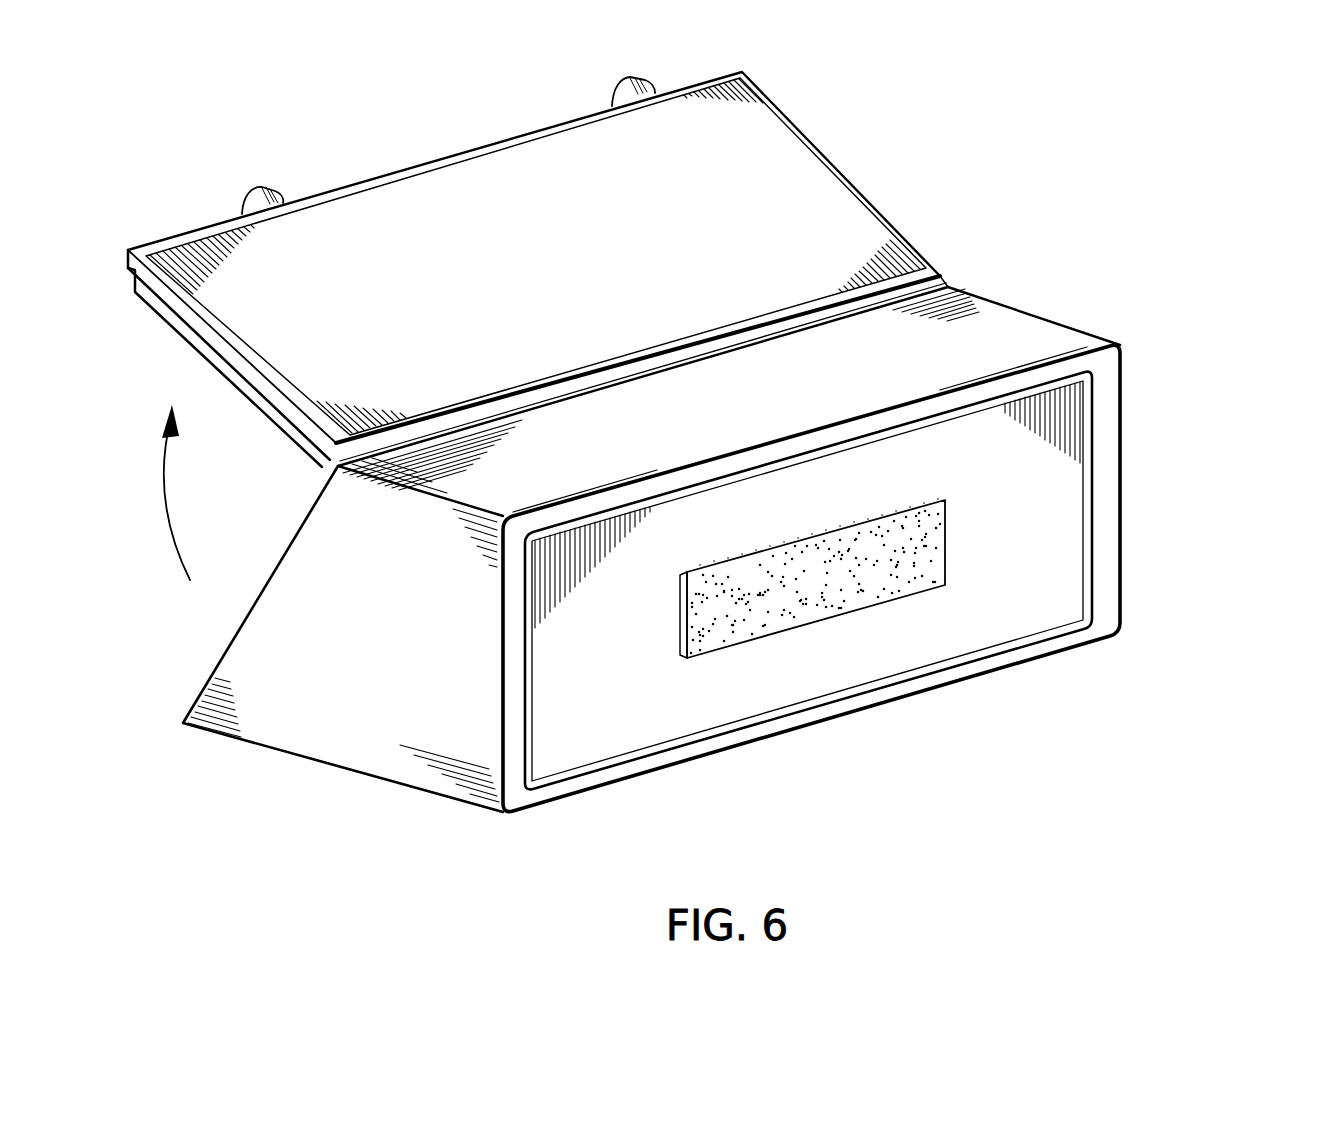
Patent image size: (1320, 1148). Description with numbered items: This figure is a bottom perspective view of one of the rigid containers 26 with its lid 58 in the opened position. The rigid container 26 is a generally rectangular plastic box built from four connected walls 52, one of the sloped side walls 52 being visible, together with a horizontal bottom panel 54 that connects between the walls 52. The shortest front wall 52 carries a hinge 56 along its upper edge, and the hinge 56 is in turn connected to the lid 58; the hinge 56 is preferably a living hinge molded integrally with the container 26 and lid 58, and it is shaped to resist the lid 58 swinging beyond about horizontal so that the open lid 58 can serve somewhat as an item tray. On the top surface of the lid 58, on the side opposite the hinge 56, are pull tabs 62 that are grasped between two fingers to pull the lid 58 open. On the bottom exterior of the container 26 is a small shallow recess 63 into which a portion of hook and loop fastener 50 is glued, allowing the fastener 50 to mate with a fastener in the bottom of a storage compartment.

The rigid container 26 is at (1124, 482).
The hook and loop fastener 50 is at (855, 587).
The wall 52 is at (955, 330).
The bottom panel 54 is at (1017, 623).
The hinge 56 is at (952, 285).
The lid 58 is at (780, 153).
The pull tab 62 is at (612, 84).
The recess 63 is at (625, 715).